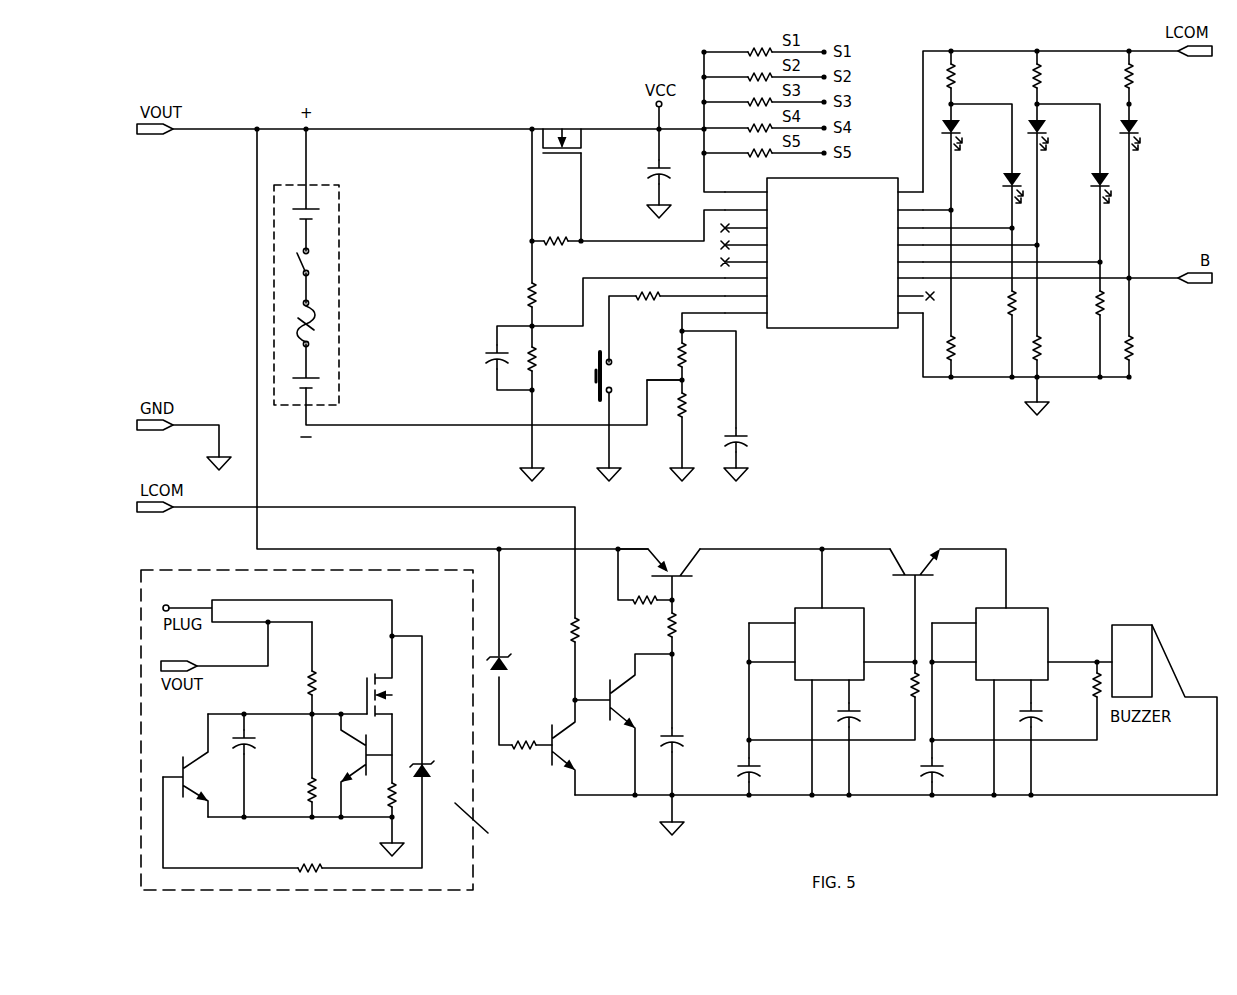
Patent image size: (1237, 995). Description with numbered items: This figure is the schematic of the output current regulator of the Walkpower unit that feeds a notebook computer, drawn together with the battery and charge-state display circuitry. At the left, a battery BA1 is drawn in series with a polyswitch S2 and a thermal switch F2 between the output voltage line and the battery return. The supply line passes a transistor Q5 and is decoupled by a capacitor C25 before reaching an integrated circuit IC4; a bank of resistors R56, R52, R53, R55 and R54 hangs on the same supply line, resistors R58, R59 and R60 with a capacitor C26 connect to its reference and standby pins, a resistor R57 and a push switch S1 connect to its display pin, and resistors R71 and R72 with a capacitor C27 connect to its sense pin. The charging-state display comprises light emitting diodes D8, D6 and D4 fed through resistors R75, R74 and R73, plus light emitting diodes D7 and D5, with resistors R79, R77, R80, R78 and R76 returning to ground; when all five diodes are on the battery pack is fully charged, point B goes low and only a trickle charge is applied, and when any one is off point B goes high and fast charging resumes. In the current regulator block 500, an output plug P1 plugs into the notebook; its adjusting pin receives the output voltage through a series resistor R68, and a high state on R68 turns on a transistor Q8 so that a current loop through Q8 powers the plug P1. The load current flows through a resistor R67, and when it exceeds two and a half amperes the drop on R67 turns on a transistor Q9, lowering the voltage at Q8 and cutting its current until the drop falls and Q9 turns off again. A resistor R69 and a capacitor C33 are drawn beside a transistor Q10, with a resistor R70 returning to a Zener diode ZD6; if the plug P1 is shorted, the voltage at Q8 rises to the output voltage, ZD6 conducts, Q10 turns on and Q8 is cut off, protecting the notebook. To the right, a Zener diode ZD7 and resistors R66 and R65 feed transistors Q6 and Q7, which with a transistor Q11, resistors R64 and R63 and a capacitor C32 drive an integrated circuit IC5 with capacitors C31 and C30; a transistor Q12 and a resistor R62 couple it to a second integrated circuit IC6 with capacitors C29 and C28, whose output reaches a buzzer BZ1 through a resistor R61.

The current regulator block 500 is at (487, 832).
The battery BA1 is at (336, 258).
The polyswitch S2 is at (371, 267).
The thermal switch F2 is at (374, 323).
The MOSFET transistor Q5 is at (562, 127).
The capacitor C25 is at (636, 174).
The resistor R56 is at (764, 44).
The resistor R52 is at (764, 69).
The resistor R53 is at (764, 94).
The resistor R55 is at (764, 120).
The resistor R54 is at (764, 145).
The resistor R58 is at (556, 251).
The resistor R59 is at (551, 295).
The resistor R60 is at (551, 359).
The capacitor C26 is at (489, 358).
The resistor R57 is at (648, 307).
The push button switch S1 is at (616, 376).
The resistor R71 is at (701, 355).
The resistor R72 is at (701, 405).
The capacitor C27 is at (757, 440).
The battery gas gauge IC BQ2010 IC4 is at (824, 253).
The resistor R75 is at (969, 85).
The resistor R74 is at (1055, 85).
The resistor R73 is at (1147, 85).
The light emitting diode D8 is at (971, 224).
The light emitting diode D6 is at (1057, 224).
The light emitting diode D4 is at (1149, 224).
The light emitting diode D7 is at (987, 197).
The light emitting diode D5 is at (1074, 197).
The resistor R79 is at (994, 334).
The resistor R77 is at (1082, 334).
The resistor R80 is at (970, 356).
The resistor R78 is at (1056, 356).
The resistor R76 is at (1148, 356).
The output plug P1 is at (177, 597).
The resistor R68 is at (293, 668).
The capacitor C33 is at (262, 765).
The resistor R69 is at (293, 765).
The transistor Q10 is at (199, 765).
The transistor Q9 is at (356, 765).
The resistor R67 is at (374, 778).
The transistor Q8 is at (374, 676).
The resistor R70 is at (310, 859).
The Zener diode ZD6 is at (435, 758).
The zener diode ZD7 is at (519, 647).
The resistor R66 is at (531, 756).
The resistor R65 is at (594, 631).
The transistor Q6 is at (577, 747).
The transistor Q7 is at (623, 724).
The transistor Q11 is at (659, 562).
The resistor R64 is at (645, 587).
The resistor R63 is at (691, 664).
The electrolytic capacitor C32 is at (694, 735).
The timer IC IC5 is at (832, 672).
The electrolytic capacitor C31 is at (771, 709).
The capacitor C30 is at (870, 715).
The transistor Q12 is at (917, 593).
The resistor R62 is at (834, 701).
The timer IC IC6 is at (1022, 689).
The capacitor C29 is at (954, 709).
The capacitor C28 is at (1052, 715).
The resistor R61 is at (1016, 701).
The buzzer BZ1 is at (1164, 698).